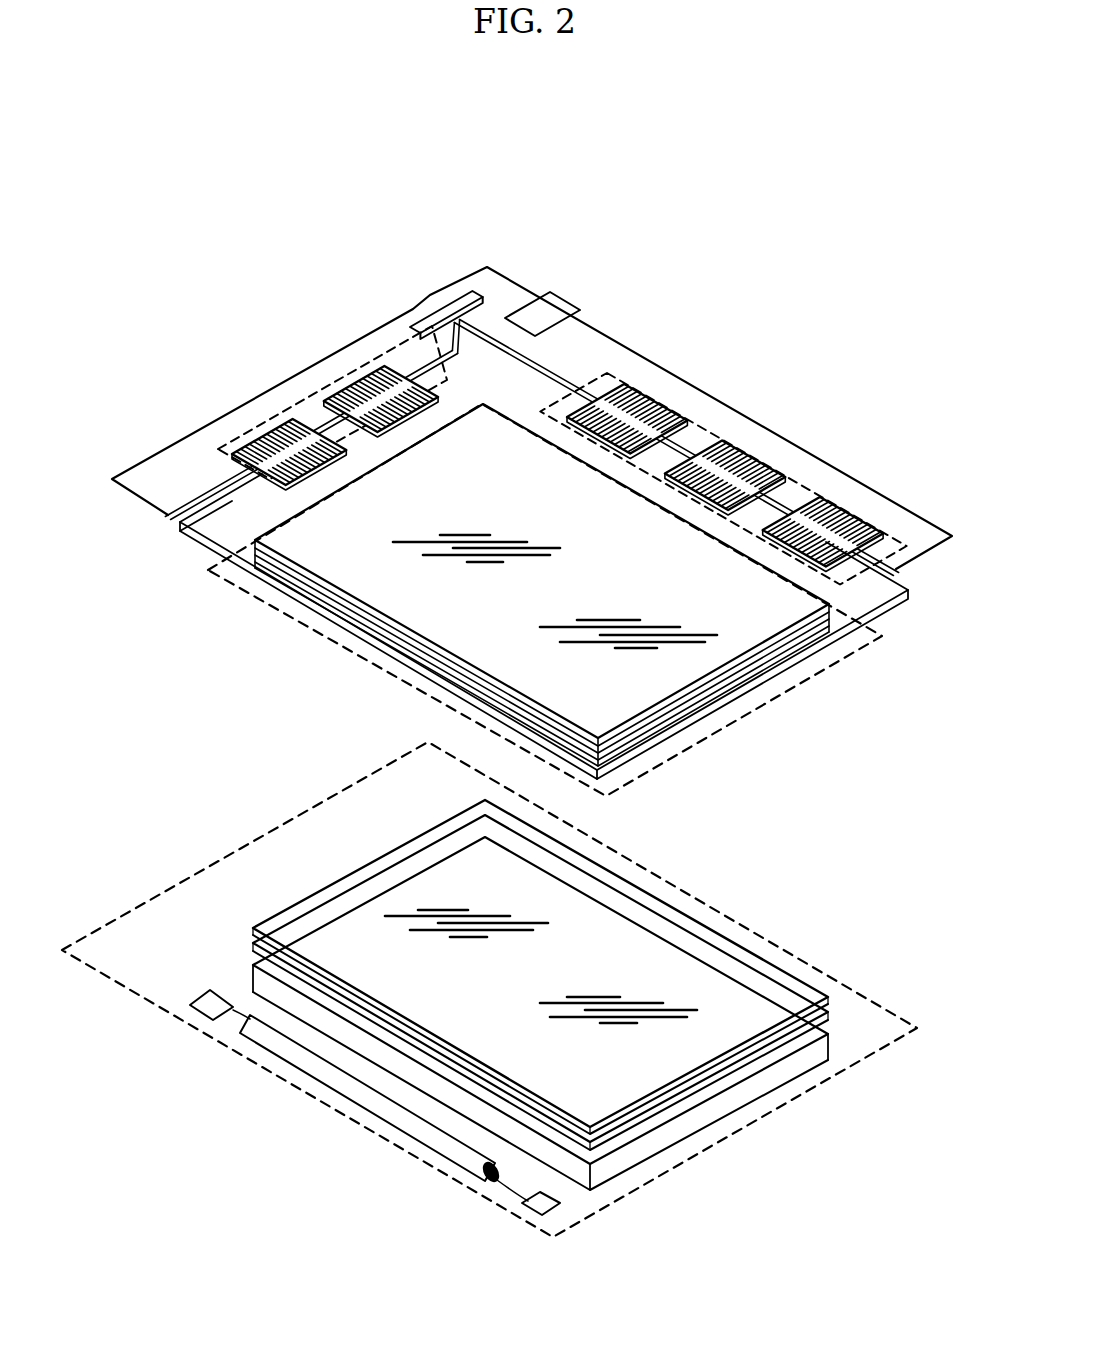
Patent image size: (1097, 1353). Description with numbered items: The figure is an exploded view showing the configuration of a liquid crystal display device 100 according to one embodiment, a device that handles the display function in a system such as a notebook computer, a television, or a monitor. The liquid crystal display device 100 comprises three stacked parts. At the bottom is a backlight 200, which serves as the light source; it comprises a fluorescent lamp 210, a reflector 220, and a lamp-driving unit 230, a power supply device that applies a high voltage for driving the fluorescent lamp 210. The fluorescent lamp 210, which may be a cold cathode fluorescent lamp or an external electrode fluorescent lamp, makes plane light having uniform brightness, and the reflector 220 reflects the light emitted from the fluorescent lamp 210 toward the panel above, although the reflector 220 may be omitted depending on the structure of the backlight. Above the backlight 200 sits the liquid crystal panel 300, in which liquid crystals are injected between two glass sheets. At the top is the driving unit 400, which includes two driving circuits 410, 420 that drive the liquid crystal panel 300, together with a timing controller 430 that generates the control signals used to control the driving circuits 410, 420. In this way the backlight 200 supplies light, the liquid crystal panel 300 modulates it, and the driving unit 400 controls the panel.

The liquid crystal display device 100 is at (809, 190).
The backlight 200 is at (677, 1168).
The fluorescent lamp 210 is at (273, 1057).
The reflector 220 is at (337, 1042).
The lamp-driving unit 230 is at (203, 1007).
The liquid crystal panel 300 is at (791, 698).
The driving unit 400 is at (642, 230).
The driving circuit 410 is at (653, 377).
The driving circuit 420 is at (381, 360).
The timing controller 430 is at (530, 297).